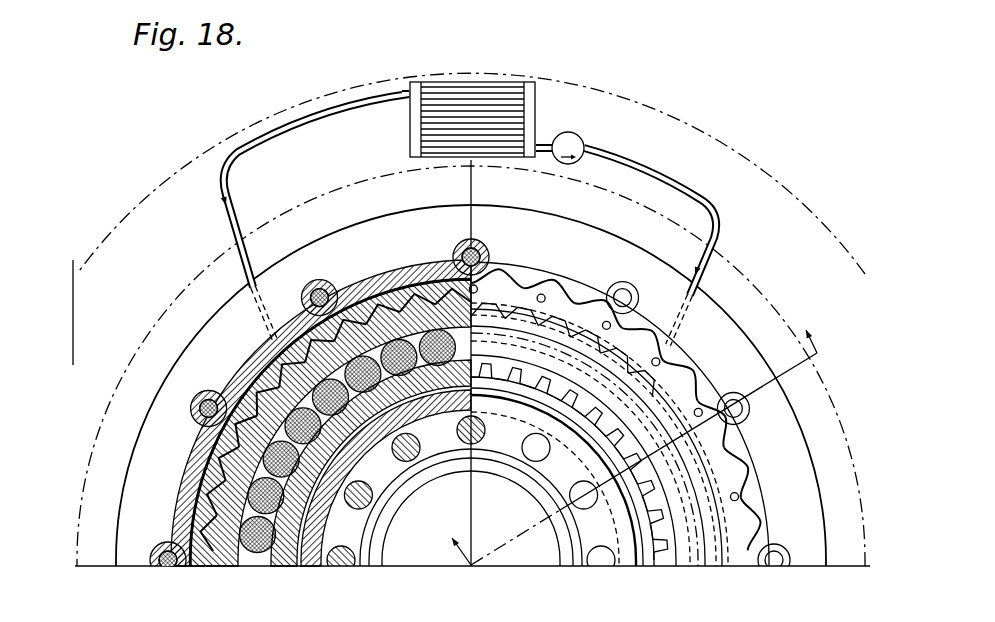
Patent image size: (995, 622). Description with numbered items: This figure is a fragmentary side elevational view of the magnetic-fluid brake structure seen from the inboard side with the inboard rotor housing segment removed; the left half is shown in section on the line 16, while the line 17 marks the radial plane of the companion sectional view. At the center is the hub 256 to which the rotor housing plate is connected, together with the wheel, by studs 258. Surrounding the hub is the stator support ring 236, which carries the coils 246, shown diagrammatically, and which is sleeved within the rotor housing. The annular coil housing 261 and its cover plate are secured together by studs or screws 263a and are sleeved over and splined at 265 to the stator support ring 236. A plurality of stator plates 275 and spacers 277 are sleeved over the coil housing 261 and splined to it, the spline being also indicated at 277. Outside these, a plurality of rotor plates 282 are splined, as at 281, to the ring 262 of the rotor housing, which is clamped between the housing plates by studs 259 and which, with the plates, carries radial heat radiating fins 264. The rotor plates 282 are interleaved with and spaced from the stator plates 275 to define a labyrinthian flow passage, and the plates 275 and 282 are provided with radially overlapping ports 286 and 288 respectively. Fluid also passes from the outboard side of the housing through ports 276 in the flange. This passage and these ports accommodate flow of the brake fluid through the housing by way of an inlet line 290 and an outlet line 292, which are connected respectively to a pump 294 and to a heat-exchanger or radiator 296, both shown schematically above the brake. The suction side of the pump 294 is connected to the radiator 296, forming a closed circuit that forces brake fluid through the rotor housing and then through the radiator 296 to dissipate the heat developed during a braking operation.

The section line 16— 16 is at (438, 556).
The section line 17— 17 is at (848, 357).
The stator support ring 236 is at (370, 452).
The coils 246 is at (456, 351).
The hub 256 is at (437, 412).
The studs 258 is at (412, 460).
The studs 259 is at (477, 252).
The annular coil housing 261 is at (233, 562).
The ring 262 is at (537, 266).
The studs or screws 263a is at (535, 358).
The radial heat radiating fins 264 is at (157, 396).
The spline 265 is at (586, 392).
The stator plates 275 is at (498, 316).
The ports 276 is at (632, 365).
The spacers 277 is at (236, 390).
The spline 281 is at (432, 262).
The rotor plates 282 is at (672, 363).
The ports 286 is at (182, 507).
The ports 288 is at (606, 321).
The inlet line 290 is at (708, 259).
The outlet line 292 is at (226, 225).
The pump 294 is at (575, 135).
The heat-exchanger or radiator 296 is at (410, 138).